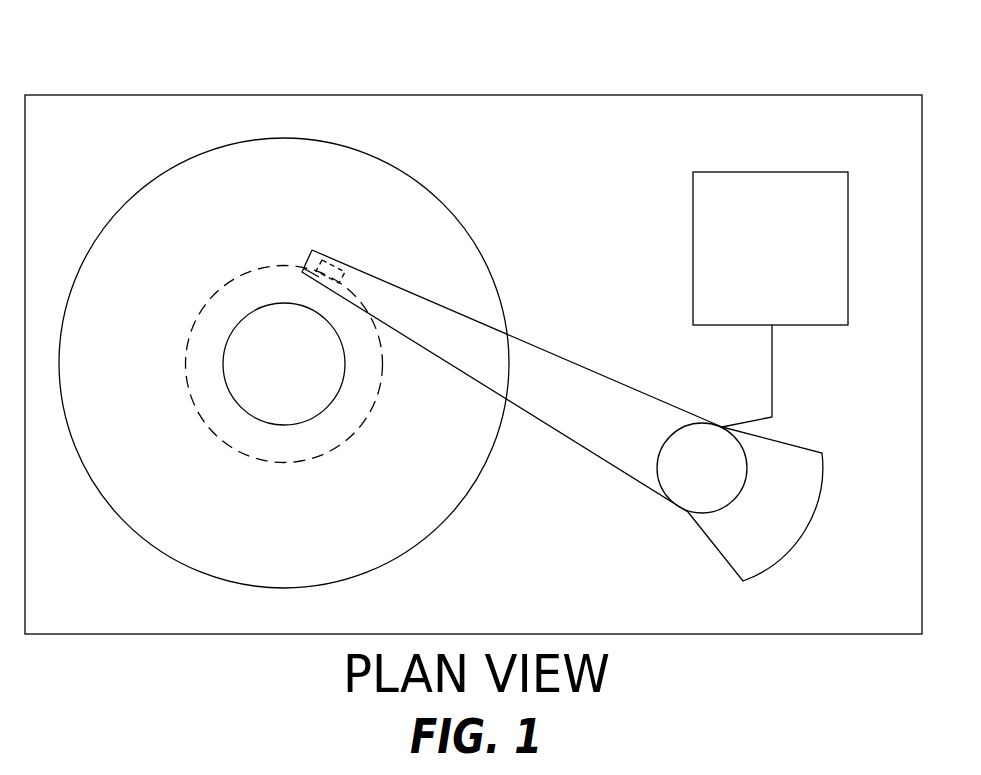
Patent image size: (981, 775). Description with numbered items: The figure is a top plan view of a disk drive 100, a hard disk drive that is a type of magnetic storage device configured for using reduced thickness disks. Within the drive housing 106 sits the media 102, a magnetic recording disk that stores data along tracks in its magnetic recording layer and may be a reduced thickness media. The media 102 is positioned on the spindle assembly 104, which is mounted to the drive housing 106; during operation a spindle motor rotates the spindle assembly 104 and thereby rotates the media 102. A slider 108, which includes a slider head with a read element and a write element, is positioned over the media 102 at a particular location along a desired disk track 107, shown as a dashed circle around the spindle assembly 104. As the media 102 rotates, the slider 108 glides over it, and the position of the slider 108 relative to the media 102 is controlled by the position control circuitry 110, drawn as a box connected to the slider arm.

The disk drive 100 is at (226, 78).
The media 102 is at (418, 183).
The spindle assembly 104 is at (263, 366).
The drive housing 106 is at (621, 95).
The disk track 107 is at (255, 267).
The slider 108 is at (358, 267).
The position control circuitry 110 is at (743, 262).